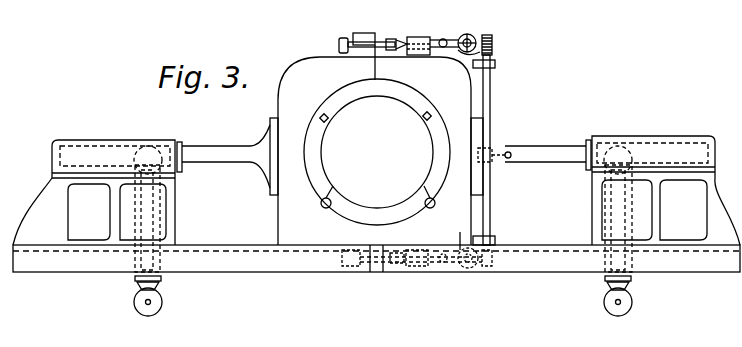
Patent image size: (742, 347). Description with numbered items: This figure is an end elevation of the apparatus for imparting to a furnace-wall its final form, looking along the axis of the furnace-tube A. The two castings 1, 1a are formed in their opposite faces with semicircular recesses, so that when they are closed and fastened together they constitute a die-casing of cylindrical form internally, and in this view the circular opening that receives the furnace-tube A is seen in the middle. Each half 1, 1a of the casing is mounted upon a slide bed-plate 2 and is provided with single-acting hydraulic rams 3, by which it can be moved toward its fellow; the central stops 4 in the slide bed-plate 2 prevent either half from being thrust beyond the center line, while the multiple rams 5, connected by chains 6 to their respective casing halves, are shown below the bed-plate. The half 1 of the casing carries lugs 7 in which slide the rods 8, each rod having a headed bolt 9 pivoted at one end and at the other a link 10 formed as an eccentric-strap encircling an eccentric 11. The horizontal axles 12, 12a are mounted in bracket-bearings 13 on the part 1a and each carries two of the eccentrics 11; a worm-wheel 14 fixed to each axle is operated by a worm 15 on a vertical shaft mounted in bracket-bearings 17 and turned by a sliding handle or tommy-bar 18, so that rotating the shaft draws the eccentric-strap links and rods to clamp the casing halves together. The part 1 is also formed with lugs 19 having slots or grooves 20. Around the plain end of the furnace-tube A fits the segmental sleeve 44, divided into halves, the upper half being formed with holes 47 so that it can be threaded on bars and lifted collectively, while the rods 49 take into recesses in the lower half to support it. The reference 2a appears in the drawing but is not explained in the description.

The casting 1 is at (370, 151).
The casting 1a is at (467, 156).
The slide bed-plate 2 is at (376, 258).
The base bearing 2a is at (470, 268).
The single-acting hydraulic ram 3 is at (206, 150).
The central stop 4 is at (370, 268).
The multiple ram 5 is at (135, 279).
The chain 6 is at (494, 210).
The lug 7 is at (417, 277).
The rod 8 is at (392, 39).
The headed bolt 9 is at (343, 151).
The link 10 is at (443, 39).
The eccentric 11 is at (456, 264).
The horizontal axle 12 is at (470, 40).
The horizontal axle 12a is at (466, 266).
The bracket-bearing 13 is at (460, 232).
The worm-wheel 14 is at (467, 33).
The worm 15 is at (491, 38).
The bracket-bearing 17 is at (495, 65).
The sliding handle or tommy-bar 18 is at (506, 150).
The lug 19 is at (358, 32).
The slot or groove 20 is at (372, 48).
The segmental sleeve 44 is at (395, 90).
The hole 47 is at (328, 118).
The rod 49 is at (378, 189).
The furnace-tube A is at (389, 100).